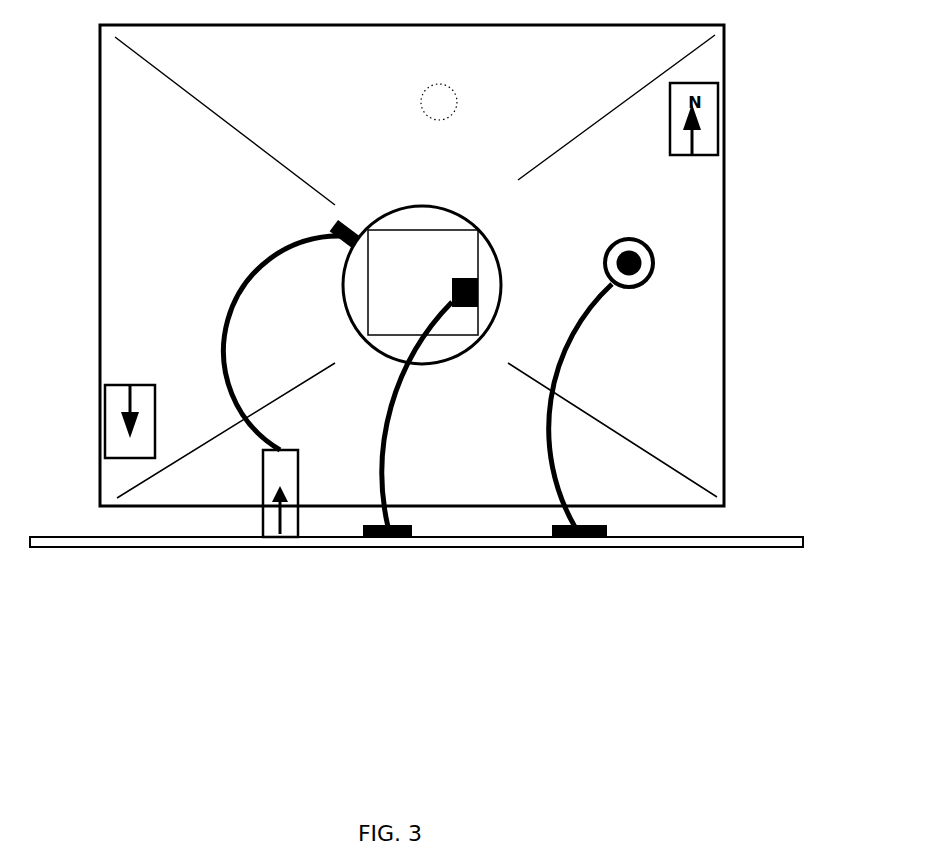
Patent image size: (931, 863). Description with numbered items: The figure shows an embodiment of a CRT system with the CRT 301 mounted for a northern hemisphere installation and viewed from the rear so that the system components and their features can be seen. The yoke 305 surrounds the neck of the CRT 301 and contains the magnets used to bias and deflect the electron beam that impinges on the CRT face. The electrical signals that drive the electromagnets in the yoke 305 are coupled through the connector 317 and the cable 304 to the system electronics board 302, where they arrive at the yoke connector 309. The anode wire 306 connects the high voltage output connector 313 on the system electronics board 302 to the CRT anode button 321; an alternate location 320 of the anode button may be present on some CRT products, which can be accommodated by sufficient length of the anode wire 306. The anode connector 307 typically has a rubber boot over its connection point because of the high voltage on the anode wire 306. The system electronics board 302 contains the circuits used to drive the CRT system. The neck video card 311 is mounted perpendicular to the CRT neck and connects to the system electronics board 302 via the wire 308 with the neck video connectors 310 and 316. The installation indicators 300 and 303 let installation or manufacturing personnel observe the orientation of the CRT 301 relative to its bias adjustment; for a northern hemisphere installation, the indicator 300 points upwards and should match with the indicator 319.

The installation indicator 300 is at (737, 95).
The CRT 301 is at (738, 240).
The system electronics board 302 is at (778, 518).
The installation indicator 303 is at (127, 365).
The cable 304 is at (252, 257).
The yoke 305 is at (435, 200).
The anode wire 306 is at (583, 360).
The anode connector 307 is at (608, 244).
The wire 308 is at (413, 380).
The yoke connector 309 is at (288, 445).
The neck video connector 310 is at (398, 515).
The neck video card 311 is at (398, 245).
The high voltage output connector 313 is at (600, 515).
The neck video connector 316 is at (478, 292).
The connector 317 is at (345, 222).
The indicator 319 is at (290, 462).
The alternate location 320 is at (462, 90).
The CRT anode button 321 is at (633, 250).